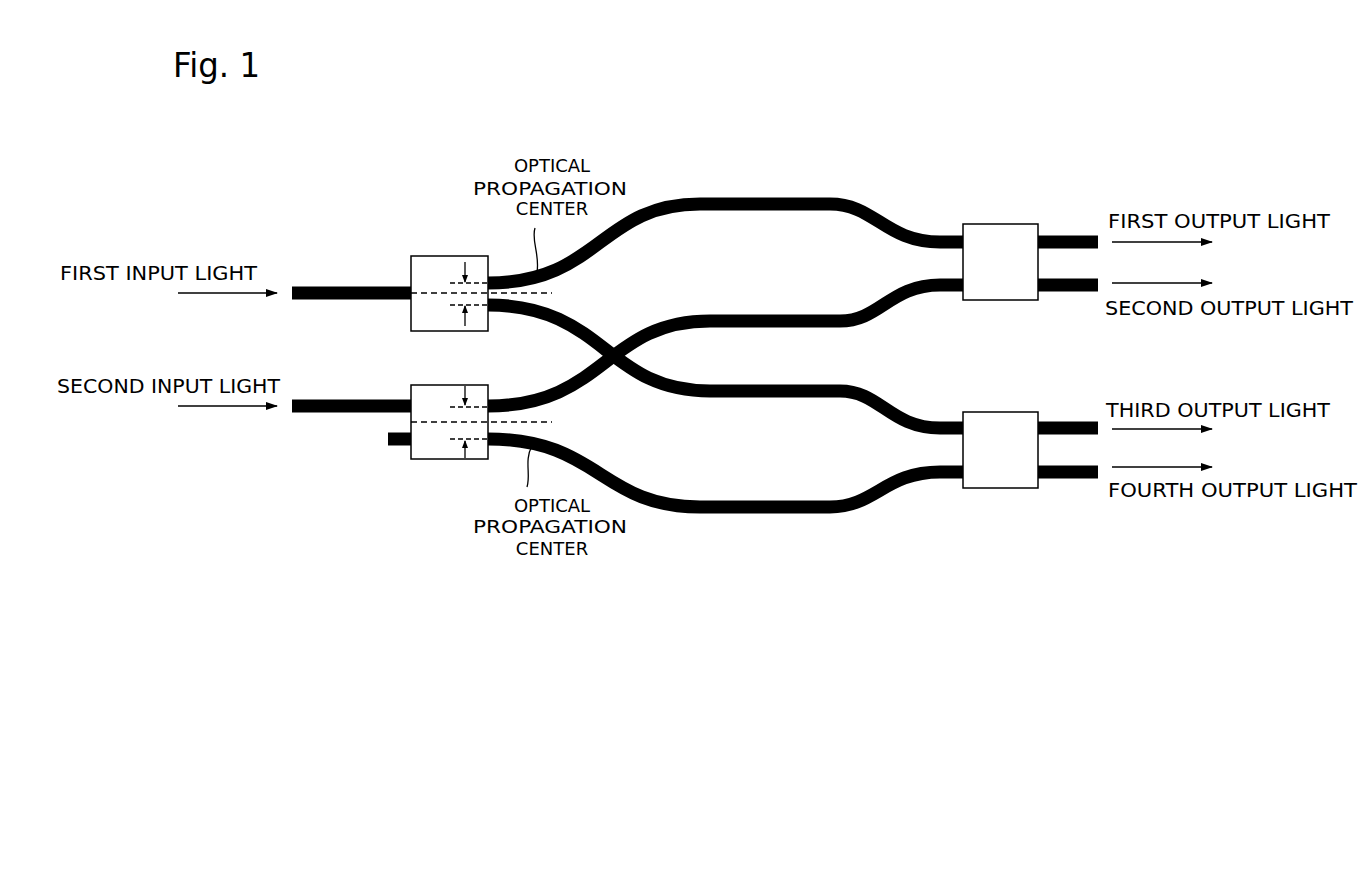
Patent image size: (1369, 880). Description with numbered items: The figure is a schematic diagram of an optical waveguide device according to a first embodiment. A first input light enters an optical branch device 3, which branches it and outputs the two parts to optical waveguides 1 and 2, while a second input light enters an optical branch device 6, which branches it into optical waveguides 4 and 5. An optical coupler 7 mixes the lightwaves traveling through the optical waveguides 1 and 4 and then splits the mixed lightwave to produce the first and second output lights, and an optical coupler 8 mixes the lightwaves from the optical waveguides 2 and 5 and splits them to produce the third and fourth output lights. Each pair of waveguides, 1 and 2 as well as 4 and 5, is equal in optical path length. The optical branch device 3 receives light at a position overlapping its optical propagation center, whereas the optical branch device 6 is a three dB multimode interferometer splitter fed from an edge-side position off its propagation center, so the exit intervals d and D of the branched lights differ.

The optical waveguide 1 is at (781, 197).
The optical waveguide 2 is at (590, 323).
The optical branch device 3 is at (437, 255).
The optical waveguide 4 is at (550, 385).
The optical waveguide 5 is at (765, 515).
The optical branch device 6 is at (438, 460).
The optical coupler 7 is at (1012, 224).
The optical coupler 8 is at (1012, 412).